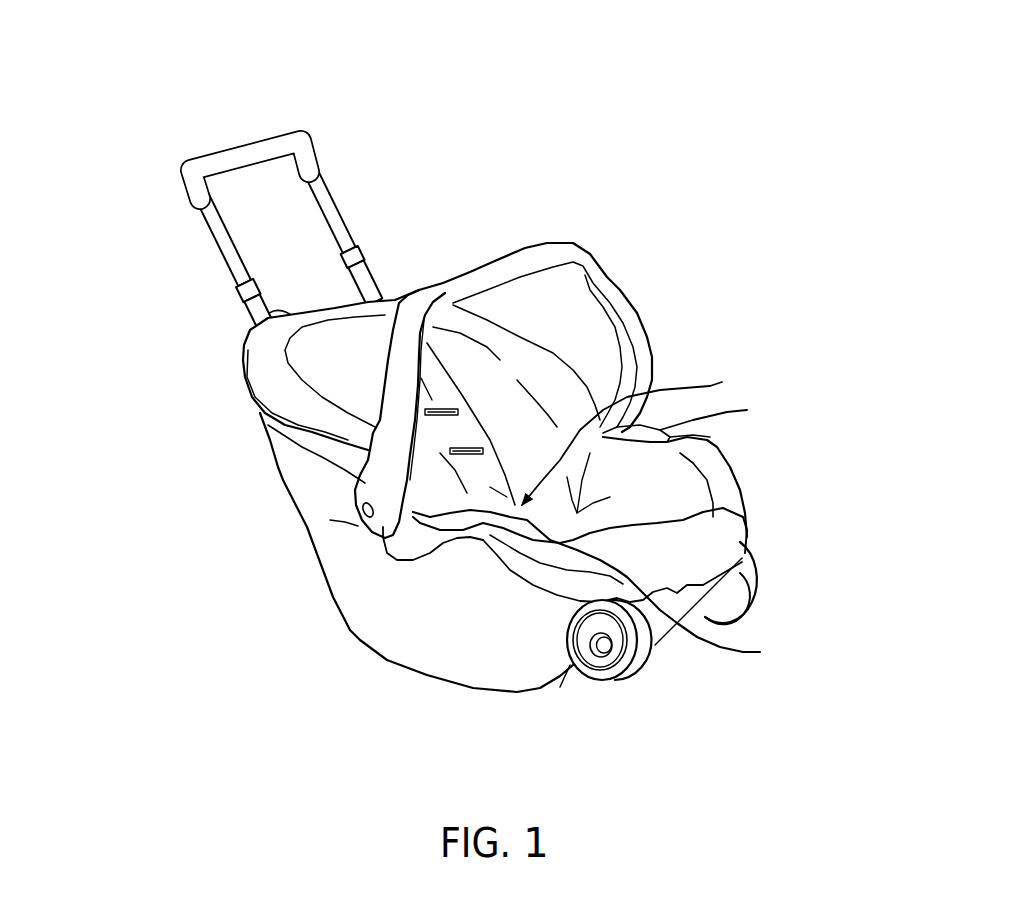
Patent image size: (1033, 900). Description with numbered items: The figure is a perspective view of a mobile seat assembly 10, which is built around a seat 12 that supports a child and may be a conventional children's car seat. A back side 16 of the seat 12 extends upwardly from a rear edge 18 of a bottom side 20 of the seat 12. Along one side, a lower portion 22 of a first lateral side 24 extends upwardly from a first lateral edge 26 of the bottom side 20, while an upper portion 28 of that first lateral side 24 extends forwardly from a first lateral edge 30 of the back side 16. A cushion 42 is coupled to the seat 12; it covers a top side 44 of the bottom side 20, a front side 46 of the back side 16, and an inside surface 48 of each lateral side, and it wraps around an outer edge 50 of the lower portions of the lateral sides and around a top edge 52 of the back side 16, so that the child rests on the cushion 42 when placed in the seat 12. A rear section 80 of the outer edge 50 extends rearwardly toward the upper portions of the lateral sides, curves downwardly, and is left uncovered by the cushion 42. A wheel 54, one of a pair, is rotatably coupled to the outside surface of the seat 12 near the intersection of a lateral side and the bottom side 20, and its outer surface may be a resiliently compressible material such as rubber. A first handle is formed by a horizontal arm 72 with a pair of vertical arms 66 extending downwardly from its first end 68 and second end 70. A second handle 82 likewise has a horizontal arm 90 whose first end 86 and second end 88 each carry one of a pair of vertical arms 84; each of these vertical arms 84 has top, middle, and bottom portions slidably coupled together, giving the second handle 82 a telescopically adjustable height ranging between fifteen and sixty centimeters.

The mobile seat assembly 10 is at (650, 50).
The seat 12 is at (363, 636).
The back side 16 is at (273, 521).
The rear edge 18 is at (420, 657).
The bottom side 20 is at (447, 718).
The lower portion 22 is at (438, 661).
The first lateral side 24 is at (365, 646).
The first lateral edge 26 is at (509, 725).
The upper portion 28 is at (291, 559).
The first lateral edge 30 is at (307, 530).
The cushion 42 is at (709, 483).
The top side 44 is at (584, 529).
The front side 46 is at (564, 401).
The inside surface 48 is at (633, 423).
The outer edge 50 is at (757, 652).
The top edge 52 is at (231, 331).
The wheel 54 is at (609, 682).
The vertical arms 66 is at (434, 308).
The first end 68 is at (400, 369).
The second end 70 is at (447, 308).
The horizontal arm 72 is at (421, 355).
The rear section 80 is at (523, 510).
The second handle 82 is at (228, 201).
The vertical arms 84 is at (257, 227).
The first end 86 is at (228, 125).
The second end 88 is at (250, 125).
The horizontal arm 90 is at (250, 125).